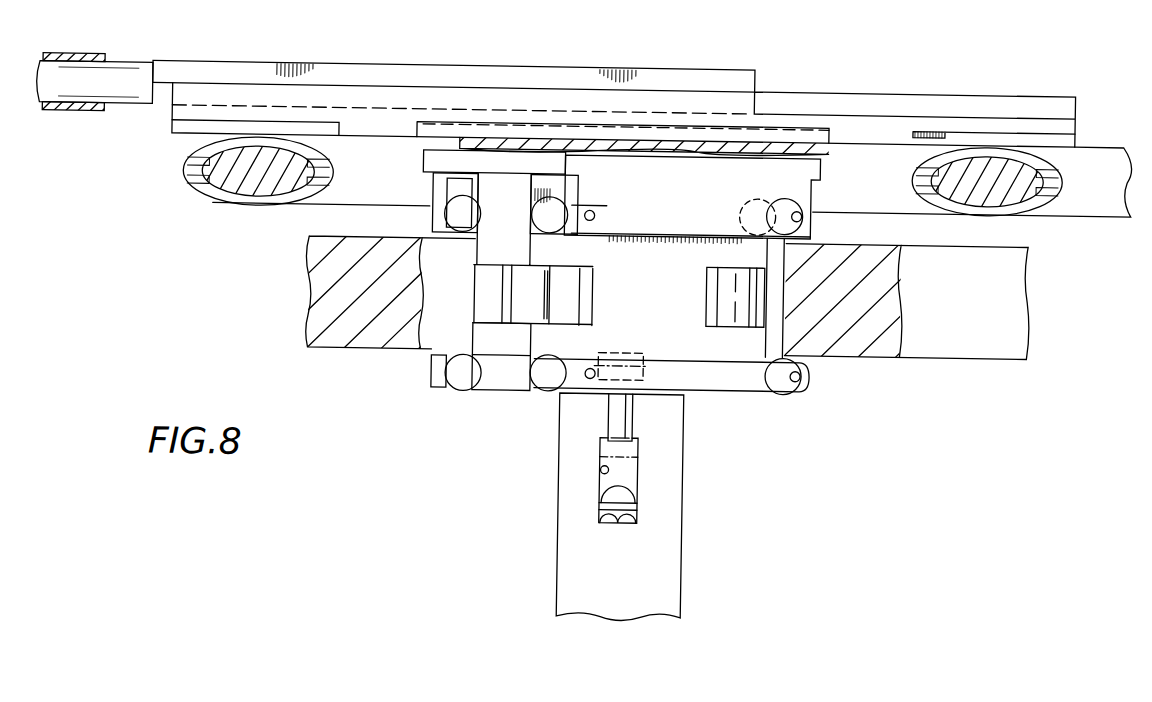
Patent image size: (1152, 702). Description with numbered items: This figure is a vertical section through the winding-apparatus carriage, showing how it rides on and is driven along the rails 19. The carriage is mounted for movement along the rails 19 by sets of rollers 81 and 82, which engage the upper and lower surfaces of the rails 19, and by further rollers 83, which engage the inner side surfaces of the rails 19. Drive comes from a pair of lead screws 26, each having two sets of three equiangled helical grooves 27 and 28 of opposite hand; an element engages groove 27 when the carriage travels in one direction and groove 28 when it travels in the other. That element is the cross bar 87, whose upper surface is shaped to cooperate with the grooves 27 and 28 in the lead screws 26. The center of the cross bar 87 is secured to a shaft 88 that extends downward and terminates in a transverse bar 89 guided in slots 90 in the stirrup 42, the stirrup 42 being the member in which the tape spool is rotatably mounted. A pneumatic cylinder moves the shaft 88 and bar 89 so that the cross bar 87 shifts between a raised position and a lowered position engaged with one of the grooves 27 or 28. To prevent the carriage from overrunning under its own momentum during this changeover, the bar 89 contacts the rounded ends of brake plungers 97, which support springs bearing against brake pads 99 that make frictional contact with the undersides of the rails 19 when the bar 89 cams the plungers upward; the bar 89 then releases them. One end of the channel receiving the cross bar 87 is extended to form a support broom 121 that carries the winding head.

The support broom 121 is at (118, 70).
The cross bar 87 is at (899, 79).
The helical groove 28 is at (199, 135).
The helical groove 27 is at (220, 187).
The lead screw 26 is at (263, 169).
The rail 19 is at (328, 280).
The roller 81 is at (460, 203).
The shaft 88 is at (620, 137).
The roller 83 is at (732, 275).
The brake pad 99 is at (631, 352).
The roller 82 is at (546, 384).
The brake plunger 97 is at (627, 435).
The slot 90 is at (612, 460).
The transverse bar 89 is at (628, 487).
The stirrup 42 is at (674, 534).